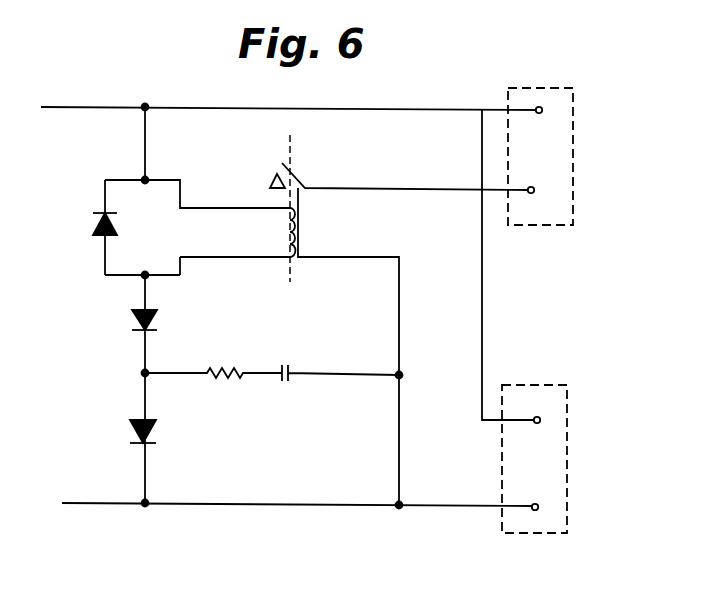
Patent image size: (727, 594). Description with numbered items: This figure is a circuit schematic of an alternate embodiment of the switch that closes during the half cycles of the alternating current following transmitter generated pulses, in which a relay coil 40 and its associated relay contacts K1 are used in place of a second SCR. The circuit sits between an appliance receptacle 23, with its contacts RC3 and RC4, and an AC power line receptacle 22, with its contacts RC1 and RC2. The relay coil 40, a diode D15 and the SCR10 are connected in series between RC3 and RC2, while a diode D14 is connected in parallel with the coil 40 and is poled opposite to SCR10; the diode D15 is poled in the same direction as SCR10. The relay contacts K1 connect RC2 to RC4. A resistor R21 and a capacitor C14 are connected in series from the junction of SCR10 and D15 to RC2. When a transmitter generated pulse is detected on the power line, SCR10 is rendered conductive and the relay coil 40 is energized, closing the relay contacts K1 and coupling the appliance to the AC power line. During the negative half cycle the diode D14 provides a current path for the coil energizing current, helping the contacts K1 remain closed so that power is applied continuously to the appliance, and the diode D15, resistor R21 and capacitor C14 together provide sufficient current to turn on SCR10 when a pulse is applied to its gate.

The AC power line receptacle 22 is at (586, 477).
The appliance receptacle 23 is at (591, 175).
The relay coil 40 is at (285, 232).
The relay contacts K1 is at (383, 175).
The diode D14 is at (80, 227).
The diode D15 is at (115, 322).
The silicon controlled rectifier SCR10 is at (99, 431).
The resistor R21 is at (213, 389).
The capacitor C14 is at (340, 388).
The receptacle contact RC1 is at (531, 434).
The receptacle contact RC2 is at (531, 494).
The receptacle contact RC3 is at (537, 125).
The receptacle contact RC4 is at (535, 179).